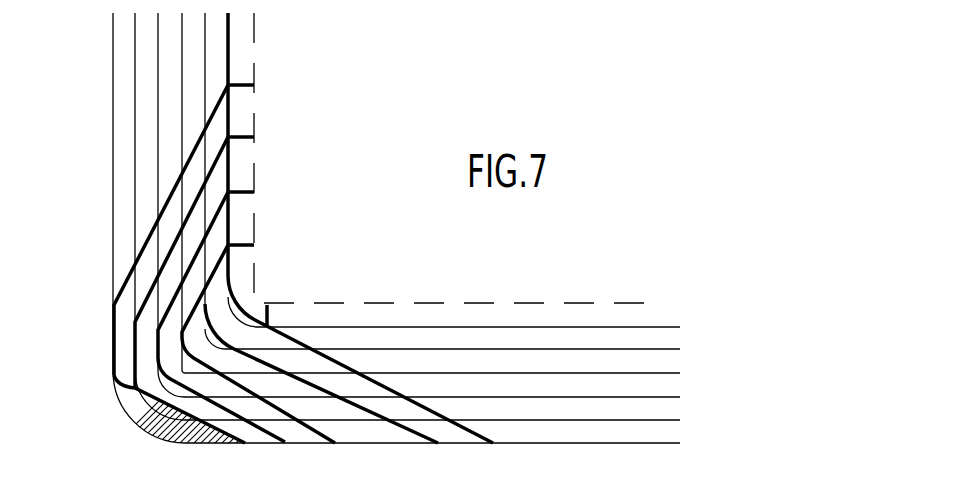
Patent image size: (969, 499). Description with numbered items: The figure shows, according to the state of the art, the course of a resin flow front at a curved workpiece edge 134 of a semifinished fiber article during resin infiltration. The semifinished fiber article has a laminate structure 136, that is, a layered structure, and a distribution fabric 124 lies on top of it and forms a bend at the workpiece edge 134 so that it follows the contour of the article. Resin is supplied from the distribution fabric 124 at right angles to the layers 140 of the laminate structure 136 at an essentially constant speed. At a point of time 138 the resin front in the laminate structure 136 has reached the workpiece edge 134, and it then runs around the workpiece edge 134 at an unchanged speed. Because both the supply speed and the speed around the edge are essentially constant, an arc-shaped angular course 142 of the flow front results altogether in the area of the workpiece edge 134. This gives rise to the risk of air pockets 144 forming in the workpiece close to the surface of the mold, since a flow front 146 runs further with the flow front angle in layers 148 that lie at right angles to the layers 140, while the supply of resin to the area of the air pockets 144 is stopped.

The distribution fabric 124 is at (483, 302).
The workpiece edge 134 is at (247, 307).
The laminate structure 136 is at (540, 421).
The point of time 138 is at (448, 422).
The layers 140 is at (670, 327).
The arc-shaped angular course 142 is at (268, 405).
The air pockets 144 is at (178, 437).
The flow front 146 is at (162, 222).
The layers 148 is at (205, 48).